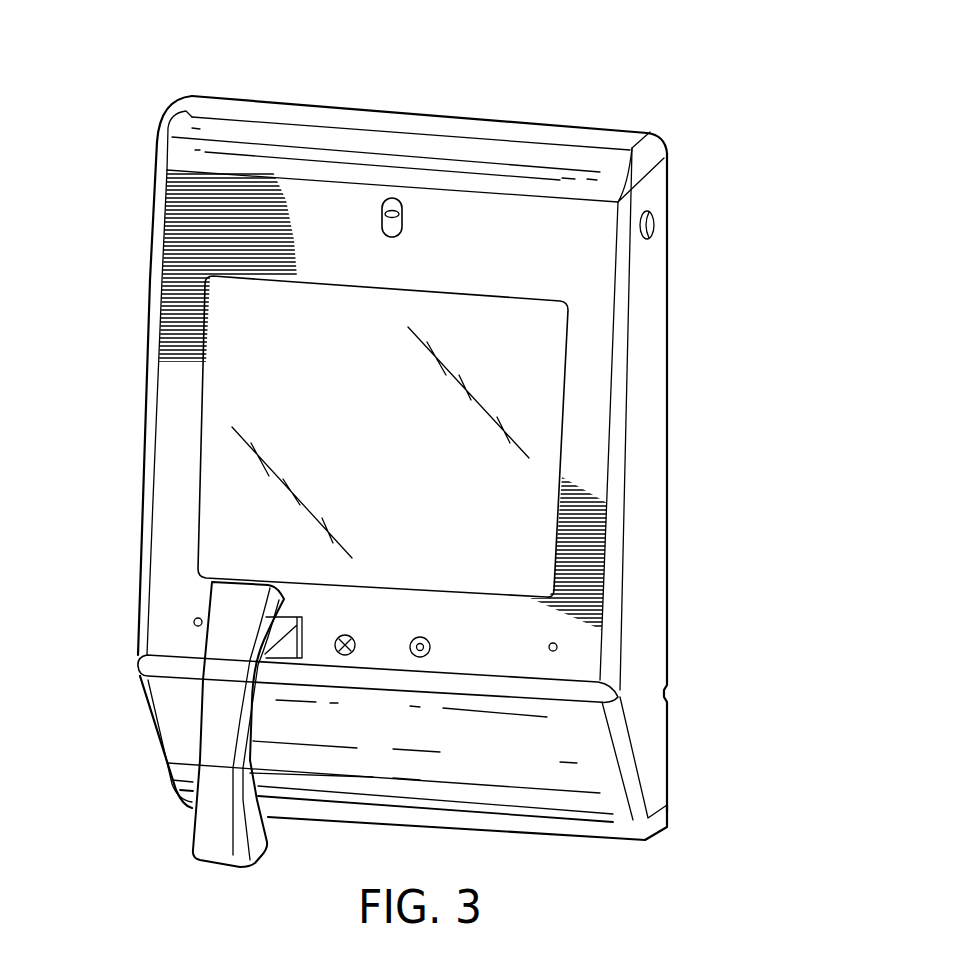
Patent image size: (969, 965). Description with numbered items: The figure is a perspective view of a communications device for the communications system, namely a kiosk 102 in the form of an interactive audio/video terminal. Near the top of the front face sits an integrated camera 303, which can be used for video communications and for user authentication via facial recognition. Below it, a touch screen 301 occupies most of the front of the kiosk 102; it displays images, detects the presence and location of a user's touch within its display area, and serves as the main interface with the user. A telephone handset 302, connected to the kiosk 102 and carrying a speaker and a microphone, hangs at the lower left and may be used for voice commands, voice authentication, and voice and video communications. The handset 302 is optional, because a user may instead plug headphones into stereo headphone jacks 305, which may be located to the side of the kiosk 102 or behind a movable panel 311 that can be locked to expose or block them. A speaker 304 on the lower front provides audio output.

The kiosk 102 is at (570, 83).
The touch screen 301 is at (566, 397).
The telephone handset 302 is at (190, 853).
The integrated camera 303 is at (400, 215).
The speaker 304 is at (428, 646).
The stereo headphone jacks 305 is at (175, 720).
The movable panel 311 is at (582, 828).